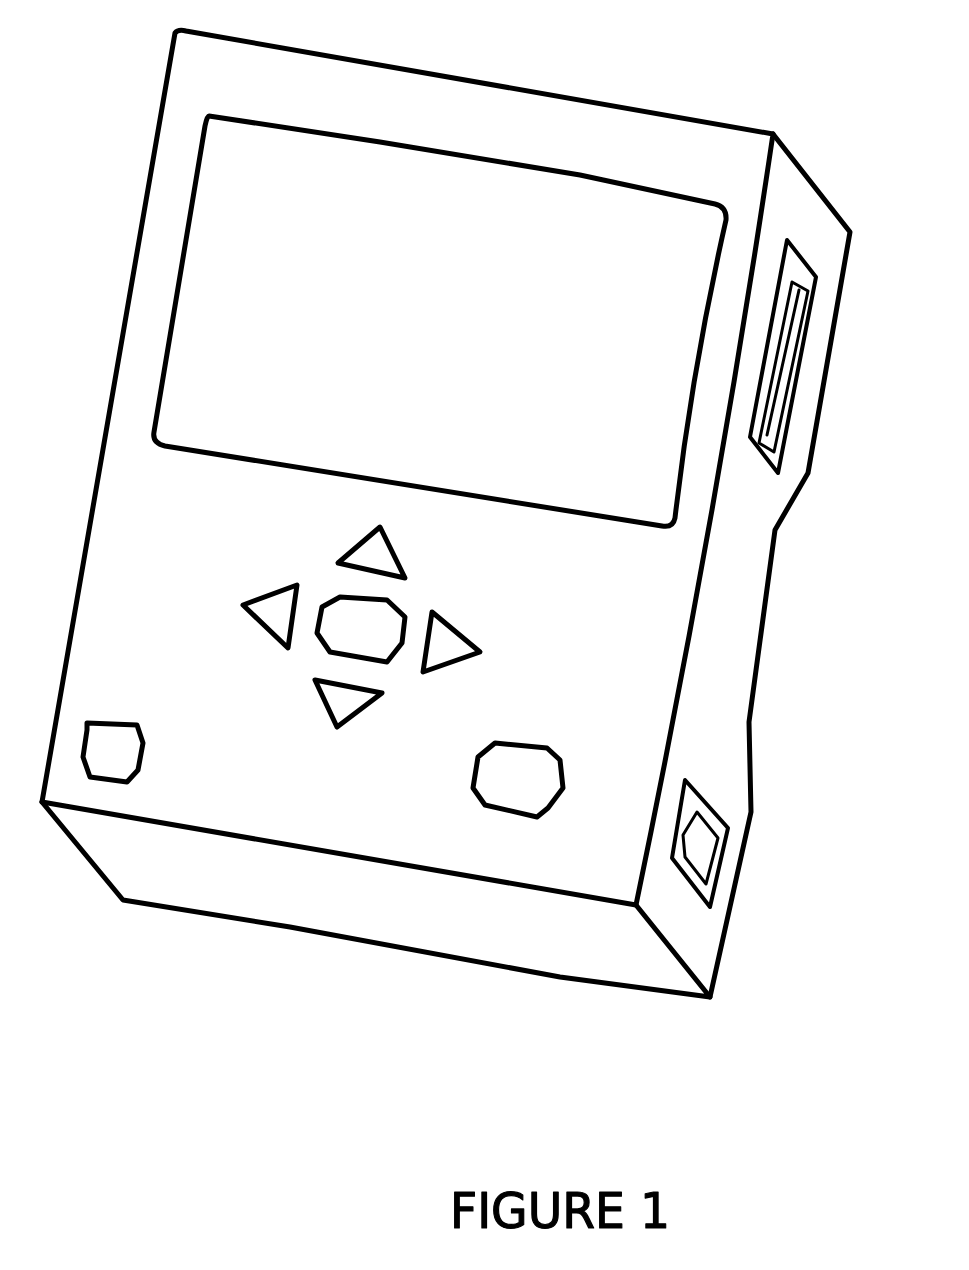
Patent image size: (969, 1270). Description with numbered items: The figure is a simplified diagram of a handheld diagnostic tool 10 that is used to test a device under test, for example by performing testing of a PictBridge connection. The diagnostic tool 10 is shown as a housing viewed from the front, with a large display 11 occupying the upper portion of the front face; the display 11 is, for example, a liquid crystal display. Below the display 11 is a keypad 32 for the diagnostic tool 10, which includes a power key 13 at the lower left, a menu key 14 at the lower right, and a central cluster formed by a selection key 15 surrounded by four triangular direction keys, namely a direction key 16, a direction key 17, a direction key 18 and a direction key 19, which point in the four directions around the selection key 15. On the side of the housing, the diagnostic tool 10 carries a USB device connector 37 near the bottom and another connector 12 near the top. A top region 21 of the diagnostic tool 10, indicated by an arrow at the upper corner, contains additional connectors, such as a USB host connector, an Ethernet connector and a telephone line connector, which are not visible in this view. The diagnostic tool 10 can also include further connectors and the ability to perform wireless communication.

The diagnostic tool 10 is at (582, 986).
The display 11 is at (610, 530).
The connector 12 is at (750, 442).
The power key 13 is at (108, 717).
The menu key 14 is at (545, 745).
The selection key 15 is at (402, 607).
The direction key 16 is at (345, 732).
The direction key 17 is at (263, 626).
The direction key 18 is at (391, 597).
The direction key 19 is at (425, 676).
The top region 21 is at (688, 86).
The keypad 32 is at (147, 590).
The USB device connector 37 is at (710, 800).